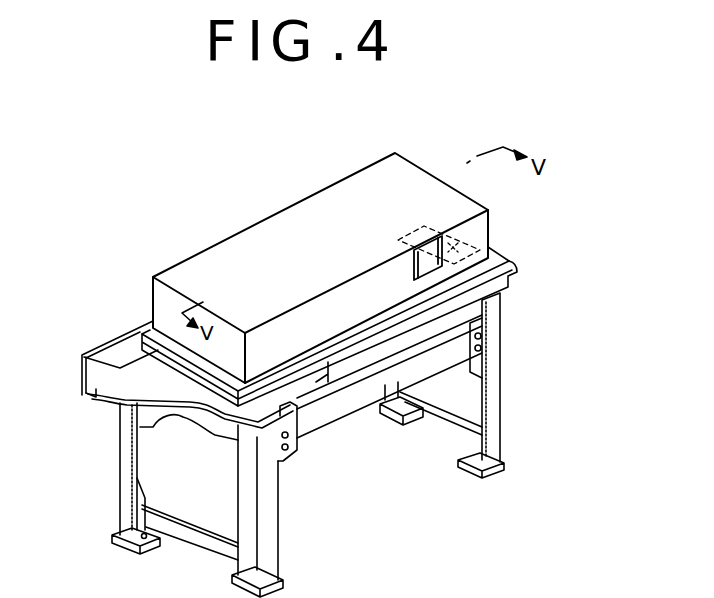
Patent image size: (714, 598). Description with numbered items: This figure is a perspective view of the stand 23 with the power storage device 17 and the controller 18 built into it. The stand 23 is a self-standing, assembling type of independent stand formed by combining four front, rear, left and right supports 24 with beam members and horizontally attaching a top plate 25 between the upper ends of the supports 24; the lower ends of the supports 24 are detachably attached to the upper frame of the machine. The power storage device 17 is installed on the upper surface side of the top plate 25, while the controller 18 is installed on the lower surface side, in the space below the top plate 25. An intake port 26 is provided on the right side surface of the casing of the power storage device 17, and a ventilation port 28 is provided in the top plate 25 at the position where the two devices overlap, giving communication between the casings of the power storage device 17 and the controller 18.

The power storage device 17 is at (214, 240).
The controller 18 is at (348, 374).
The stand 23 is at (110, 448).
The supports 24 is at (117, 503).
The top plate 25 is at (493, 247).
The intake port 26 is at (492, 270).
The ventilation port 28 is at (455, 238).